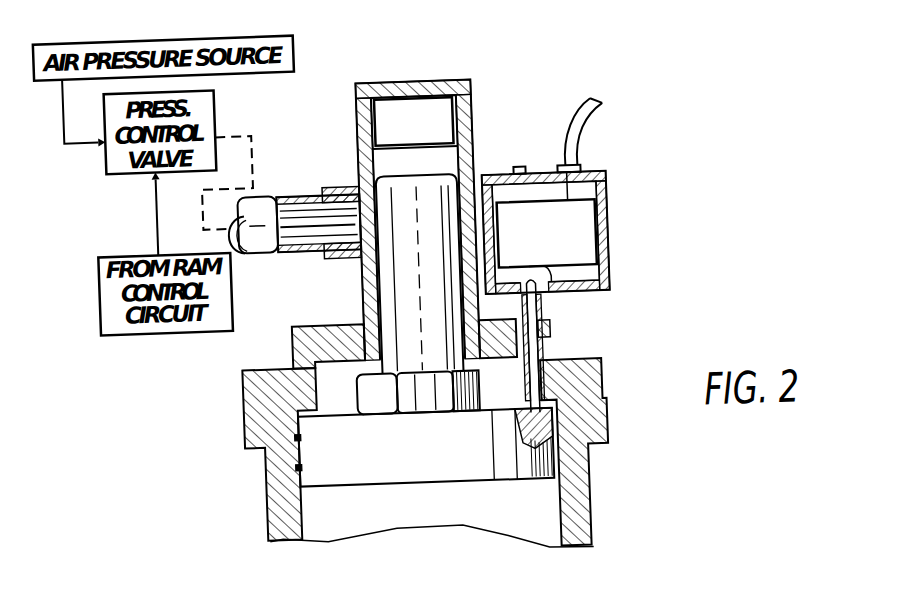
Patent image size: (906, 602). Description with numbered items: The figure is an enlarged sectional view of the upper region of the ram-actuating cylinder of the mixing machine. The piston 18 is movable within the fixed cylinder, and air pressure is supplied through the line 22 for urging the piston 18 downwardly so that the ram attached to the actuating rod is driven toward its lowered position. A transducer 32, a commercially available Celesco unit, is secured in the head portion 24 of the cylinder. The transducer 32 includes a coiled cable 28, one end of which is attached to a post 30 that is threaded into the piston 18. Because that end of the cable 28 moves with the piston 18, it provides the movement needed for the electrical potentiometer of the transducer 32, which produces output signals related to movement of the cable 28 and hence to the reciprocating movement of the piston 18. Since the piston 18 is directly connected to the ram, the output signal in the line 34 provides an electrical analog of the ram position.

The piston 18 is at (440, 455).
The line 22 is at (264, 242).
The head portion 24 is at (317, 326).
The coiled cable 28 is at (544, 296).
The post 30 is at (528, 353).
The transducer 32 is at (613, 268).
The line 34 is at (613, 108).